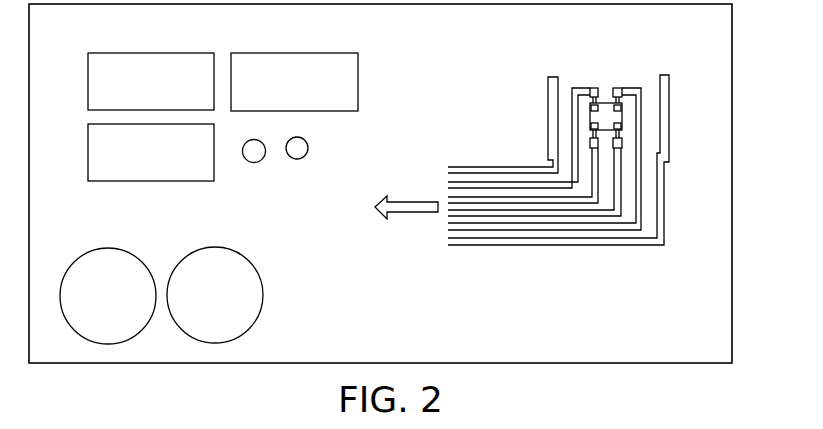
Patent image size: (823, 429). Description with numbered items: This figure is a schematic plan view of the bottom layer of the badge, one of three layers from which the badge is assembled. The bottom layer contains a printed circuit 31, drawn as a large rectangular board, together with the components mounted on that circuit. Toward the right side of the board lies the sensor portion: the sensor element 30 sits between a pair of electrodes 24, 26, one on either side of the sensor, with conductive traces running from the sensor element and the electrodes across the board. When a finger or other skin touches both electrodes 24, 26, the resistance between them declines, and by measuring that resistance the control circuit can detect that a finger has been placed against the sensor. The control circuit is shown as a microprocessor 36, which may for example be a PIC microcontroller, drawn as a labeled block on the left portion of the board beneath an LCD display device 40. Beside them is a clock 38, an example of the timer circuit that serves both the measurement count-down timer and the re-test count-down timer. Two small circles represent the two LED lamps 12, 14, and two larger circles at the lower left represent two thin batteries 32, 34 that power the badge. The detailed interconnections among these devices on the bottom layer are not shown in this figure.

The LED lamp 12 is at (251, 162).
The LED lamp 14 is at (297, 159).
The electrode 24 is at (548, 100).
The electrode 26 is at (672, 121).
The sensor element 30 is at (605, 105).
The printed circuit 31 is at (685, 364).
The battery 32 is at (108, 248).
The battery 34 is at (263, 288).
The microprocessor 36 is at (167, 182).
The clock 38 is at (303, 53).
The LCD display device 40 is at (167, 52).